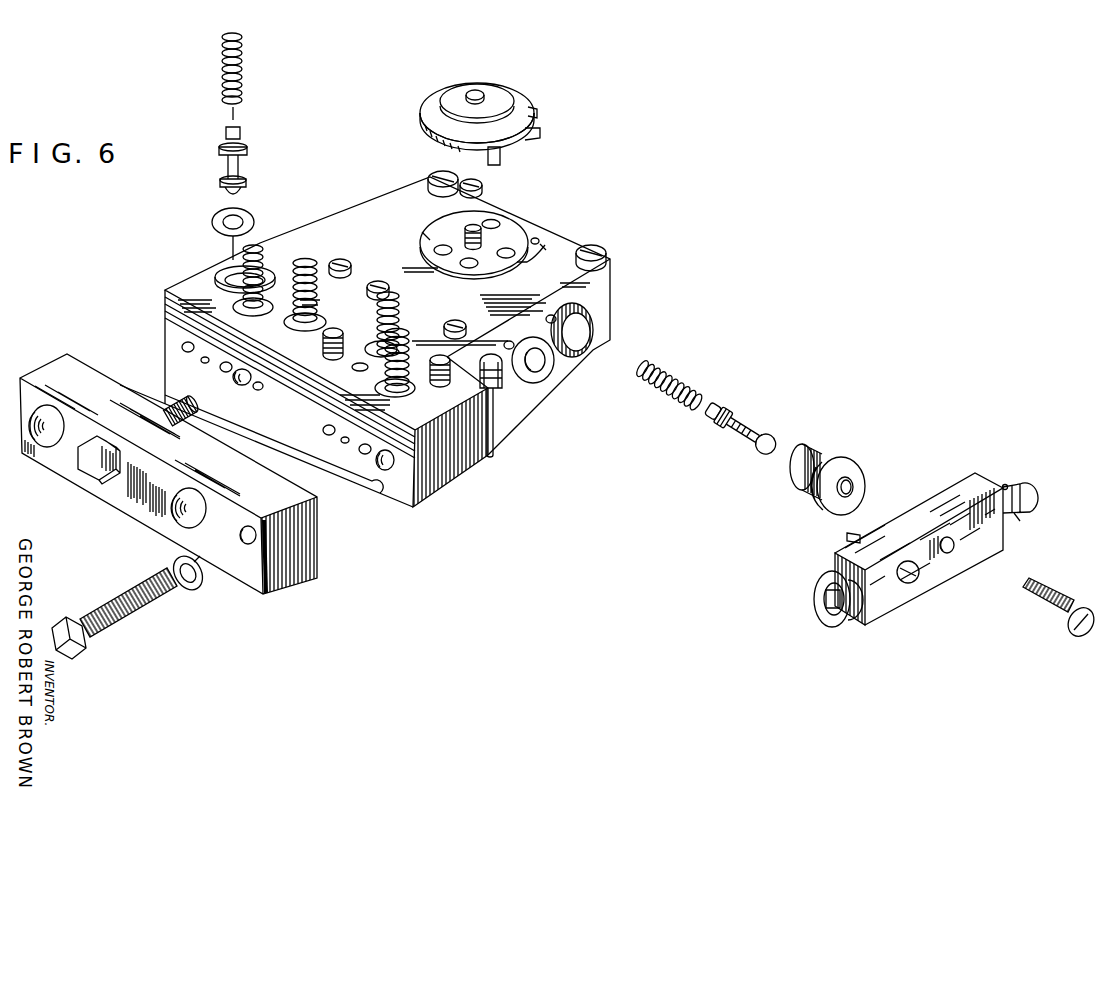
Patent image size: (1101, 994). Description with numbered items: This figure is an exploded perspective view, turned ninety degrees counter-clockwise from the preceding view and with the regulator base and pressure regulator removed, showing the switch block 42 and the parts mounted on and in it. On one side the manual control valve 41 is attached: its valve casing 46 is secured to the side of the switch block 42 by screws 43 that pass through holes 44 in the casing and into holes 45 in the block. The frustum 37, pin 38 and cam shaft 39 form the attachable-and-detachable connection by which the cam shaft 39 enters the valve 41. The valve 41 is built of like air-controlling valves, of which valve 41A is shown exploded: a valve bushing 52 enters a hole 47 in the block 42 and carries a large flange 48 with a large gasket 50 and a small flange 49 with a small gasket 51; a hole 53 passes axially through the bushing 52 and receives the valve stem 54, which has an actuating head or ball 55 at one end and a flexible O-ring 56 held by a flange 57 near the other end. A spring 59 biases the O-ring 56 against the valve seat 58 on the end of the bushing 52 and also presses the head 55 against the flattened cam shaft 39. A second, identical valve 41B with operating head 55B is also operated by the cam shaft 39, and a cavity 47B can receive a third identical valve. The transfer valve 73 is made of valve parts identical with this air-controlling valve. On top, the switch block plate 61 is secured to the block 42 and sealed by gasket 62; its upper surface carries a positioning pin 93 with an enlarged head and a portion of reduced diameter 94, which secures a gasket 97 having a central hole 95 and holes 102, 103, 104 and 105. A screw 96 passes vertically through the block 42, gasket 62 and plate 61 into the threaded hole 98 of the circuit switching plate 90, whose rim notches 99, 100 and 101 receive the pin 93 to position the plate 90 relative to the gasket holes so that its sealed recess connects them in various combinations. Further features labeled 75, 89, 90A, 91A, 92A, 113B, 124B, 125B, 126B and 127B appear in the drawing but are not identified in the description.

The frustum 37 is at (1021, 484).
The pin 38 is at (1003, 484).
The cam shaft 39 is at (1018, 521).
The manual control valve 41 is at (956, 563).
The valve 41A is at (734, 513).
The valve 41B is at (539, 401).
The switch block 42 is at (404, 355).
The screws 43 is at (909, 584).
The holes 44 is at (950, 553).
The holes 45 is at (550, 315).
The valve casing 46 is at (957, 490).
The hole 47 is at (580, 318).
The cavity 47B is at (505, 405).
The large flange 48 is at (830, 474).
The small flange 49 is at (806, 500).
The large gasket 50 is at (832, 462).
The small gasket 51 is at (812, 452).
The valve bushing 52 is at (854, 456).
The hole 53 is at (852, 487).
The valve stem 54 is at (742, 427).
The actuating head 55 is at (763, 449).
The operating head 55B is at (540, 366).
The flexible O-ring 56 is at (736, 418).
The flange 57 is at (722, 408).
The valve seat 58 is at (792, 478).
The spring 59 is at (667, 386).
The switch block plate 61 is at (197, 280).
The gasket 62 is at (165, 312).
The transfer valve 73 is at (359, 201).
The slot 75 is at (372, 495).
The manifold block 89 is at (314, 587).
The circuit switching plate 90 is at (501, 117).
The bolt 90A is at (110, 622).
The threaded hole 91A is at (390, 472).
The hole 92A is at (344, 444).
The positioning pin 93 is at (539, 240).
The portion of reduced diameter 94 is at (548, 250).
The central hole 95 is at (430, 229).
The screw 96 is at (470, 227).
The gasket 97 is at (430, 240).
The hole 98 is at (472, 89).
The notch 99 is at (538, 113).
The notch 100 is at (538, 140).
The notch 101 is at (496, 160).
The hole 102 is at (500, 223).
The hole 103 is at (520, 262).
The hole 104 is at (468, 267).
The hole 105 is at (443, 256).
The hole 113B is at (328, 436).
The hole 124B is at (364, 456).
The threaded plug 125B is at (256, 391).
The hole 126B is at (221, 369).
The hole 127B is at (182, 346).